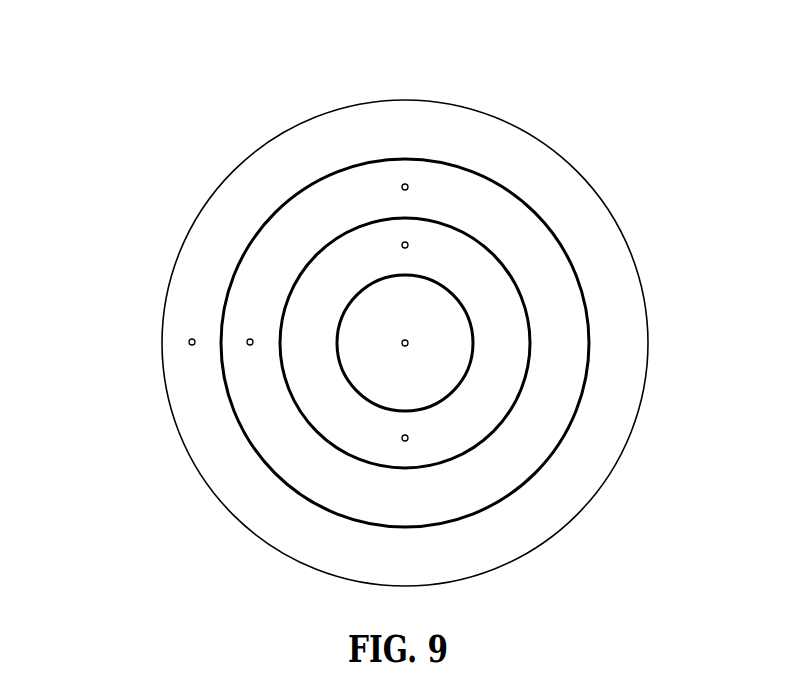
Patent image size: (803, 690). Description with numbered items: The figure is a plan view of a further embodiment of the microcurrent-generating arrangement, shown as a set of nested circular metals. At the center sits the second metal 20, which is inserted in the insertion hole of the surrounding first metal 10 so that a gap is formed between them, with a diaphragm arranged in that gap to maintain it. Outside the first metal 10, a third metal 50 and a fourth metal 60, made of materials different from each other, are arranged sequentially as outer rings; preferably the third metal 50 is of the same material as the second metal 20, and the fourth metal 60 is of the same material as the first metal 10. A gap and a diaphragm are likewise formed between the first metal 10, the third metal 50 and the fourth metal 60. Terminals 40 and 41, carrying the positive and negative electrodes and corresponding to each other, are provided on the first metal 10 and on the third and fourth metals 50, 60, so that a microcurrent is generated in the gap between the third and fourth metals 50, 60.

The first metal 10 is at (498, 288).
The second metal 20 is at (443, 330).
The terminal 40 is at (409, 245).
The terminal 41 is at (403, 184).
The third metal 50 is at (280, 437).
The fourth metal 60 is at (195, 385).